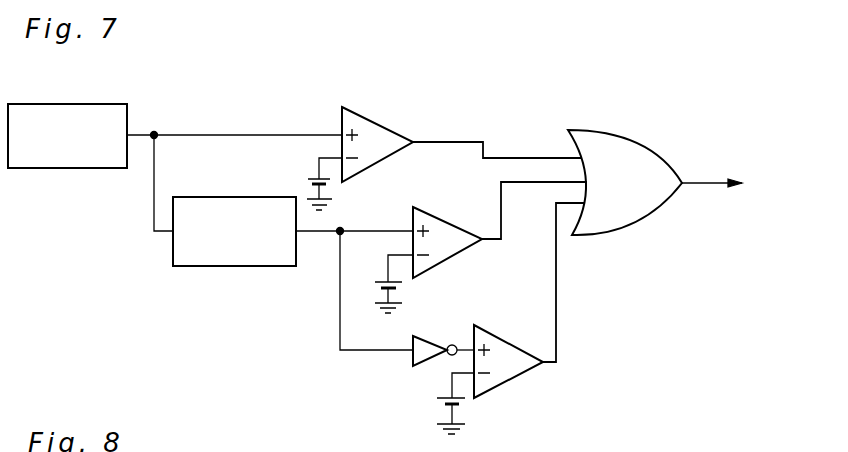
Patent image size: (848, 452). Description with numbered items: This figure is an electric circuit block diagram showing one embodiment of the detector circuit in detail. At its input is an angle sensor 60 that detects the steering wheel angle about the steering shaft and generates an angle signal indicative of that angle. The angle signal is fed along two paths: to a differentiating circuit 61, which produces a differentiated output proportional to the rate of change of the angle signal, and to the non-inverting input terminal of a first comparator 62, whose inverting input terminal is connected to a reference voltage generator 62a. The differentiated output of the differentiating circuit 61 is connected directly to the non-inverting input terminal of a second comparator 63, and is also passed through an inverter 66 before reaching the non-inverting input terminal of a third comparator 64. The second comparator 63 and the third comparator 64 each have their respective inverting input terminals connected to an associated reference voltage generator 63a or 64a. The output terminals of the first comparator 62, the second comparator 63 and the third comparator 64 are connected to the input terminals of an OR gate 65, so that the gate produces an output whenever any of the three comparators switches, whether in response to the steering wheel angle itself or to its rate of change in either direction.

The angle sensor 60 is at (121, 104).
The differentiating circuit 61 is at (243, 267).
The first comparator 62 is at (383, 125).
The reference voltage generator 62a is at (309, 181).
The second comparator 63 is at (446, 216).
The reference voltage generator 63a is at (402, 284).
The third comparator 64 is at (518, 368).
The reference voltage generator 64a is at (462, 402).
The OR gate 65 is at (622, 146).
The inverter 66 is at (413, 362).